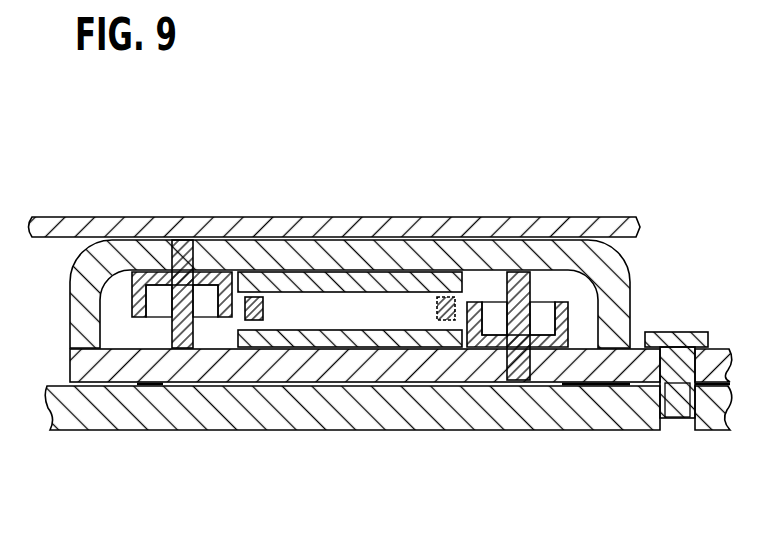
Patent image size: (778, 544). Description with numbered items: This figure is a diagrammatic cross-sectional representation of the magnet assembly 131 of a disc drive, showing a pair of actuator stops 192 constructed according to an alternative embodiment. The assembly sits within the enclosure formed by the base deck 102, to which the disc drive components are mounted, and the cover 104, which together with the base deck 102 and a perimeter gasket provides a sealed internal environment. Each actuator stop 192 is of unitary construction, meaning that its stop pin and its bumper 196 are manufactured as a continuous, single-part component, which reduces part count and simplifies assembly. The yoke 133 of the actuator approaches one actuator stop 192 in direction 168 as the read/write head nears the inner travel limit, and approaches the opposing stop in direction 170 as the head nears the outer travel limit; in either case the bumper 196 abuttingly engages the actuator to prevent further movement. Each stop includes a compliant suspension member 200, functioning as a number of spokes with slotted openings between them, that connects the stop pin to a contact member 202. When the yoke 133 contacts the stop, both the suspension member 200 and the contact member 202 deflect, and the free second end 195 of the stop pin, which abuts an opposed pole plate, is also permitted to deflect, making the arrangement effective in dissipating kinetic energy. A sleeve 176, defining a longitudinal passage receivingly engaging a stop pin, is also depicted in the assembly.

The base deck 102 is at (168, 433).
The cover 104 is at (132, 217).
The magnet assembly 131 is at (389, 192).
The yoke 133 is at (267, 272).
The direction 168 is at (332, 306).
The direction 170 is at (420, 306).
The sleeve 176 is at (568, 328).
The actuator stop 192 is at (553, 280).
The second end of the stop pin 195 is at (515, 272).
The bumper 196 is at (132, 294).
The suspension member 200 is at (114, 291).
The contact member 202 is at (568, 303).